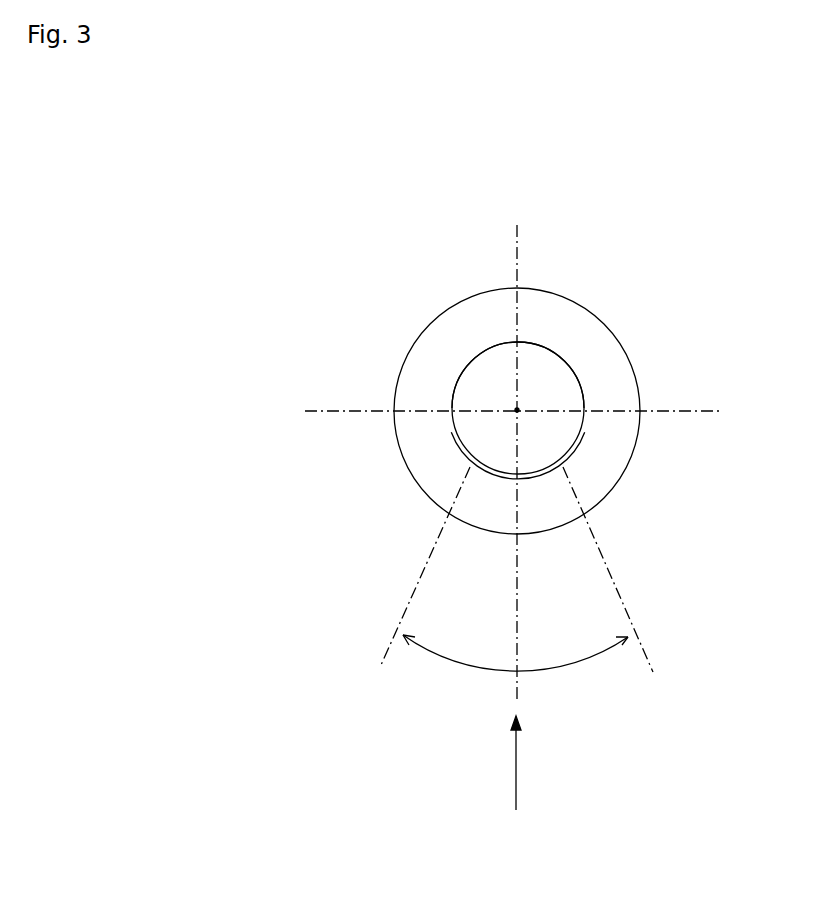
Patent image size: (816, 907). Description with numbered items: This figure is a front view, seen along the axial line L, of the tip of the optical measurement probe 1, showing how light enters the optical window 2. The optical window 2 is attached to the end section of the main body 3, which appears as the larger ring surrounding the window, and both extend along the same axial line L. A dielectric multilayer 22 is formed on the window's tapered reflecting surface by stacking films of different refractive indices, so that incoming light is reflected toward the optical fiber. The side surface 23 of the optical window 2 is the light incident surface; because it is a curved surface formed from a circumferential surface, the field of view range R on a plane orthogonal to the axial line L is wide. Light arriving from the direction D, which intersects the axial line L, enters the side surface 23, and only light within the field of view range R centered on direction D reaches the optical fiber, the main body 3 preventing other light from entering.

The optical measurement probe 1 is at (594, 213).
The optical window 2 is at (457, 448).
The main body 3 is at (420, 333).
The dielectric multilayer 22 is at (570, 388).
The side surface 23 is at (567, 457).
The axial line L is at (516, 408).
The field of view range R is at (587, 662).
The direction D is at (516, 778).